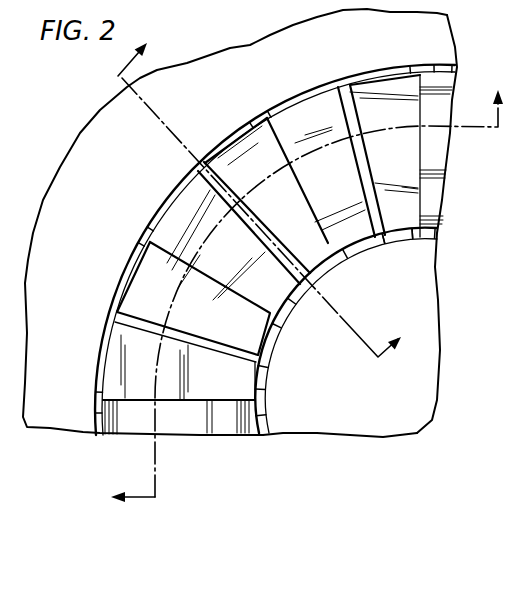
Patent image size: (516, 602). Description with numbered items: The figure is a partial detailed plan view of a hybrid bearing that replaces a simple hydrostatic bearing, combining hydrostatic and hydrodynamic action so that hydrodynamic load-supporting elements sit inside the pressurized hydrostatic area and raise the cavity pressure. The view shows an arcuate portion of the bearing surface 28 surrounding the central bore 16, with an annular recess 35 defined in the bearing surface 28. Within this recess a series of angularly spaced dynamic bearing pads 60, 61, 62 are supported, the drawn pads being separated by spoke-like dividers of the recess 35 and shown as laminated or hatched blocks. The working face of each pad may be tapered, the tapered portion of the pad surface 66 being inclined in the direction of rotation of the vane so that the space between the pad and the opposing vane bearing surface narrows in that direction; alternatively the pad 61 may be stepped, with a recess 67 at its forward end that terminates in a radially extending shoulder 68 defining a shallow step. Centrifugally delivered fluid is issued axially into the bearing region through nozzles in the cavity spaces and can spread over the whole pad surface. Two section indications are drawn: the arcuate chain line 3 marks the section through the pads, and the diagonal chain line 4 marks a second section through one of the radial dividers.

The rotor bore 16 is at (331, 413).
The bearing surface 28 is at (92, 138).
The annular recess 35 is at (308, 88).
The dynamic bearing pad 60 is at (296, 294).
The dynamic bearing pad 61 is at (373, 245).
The dynamic bearing pad 62 is at (402, 245).
The tapered portion of the pad surface 66 is at (393, 87).
The recess 67 is at (247, 143).
The radially extending shoulder 68 is at (312, 210).
The section line 3- 3 is at (295, 287).
The section line 4- 4 is at (268, 189).